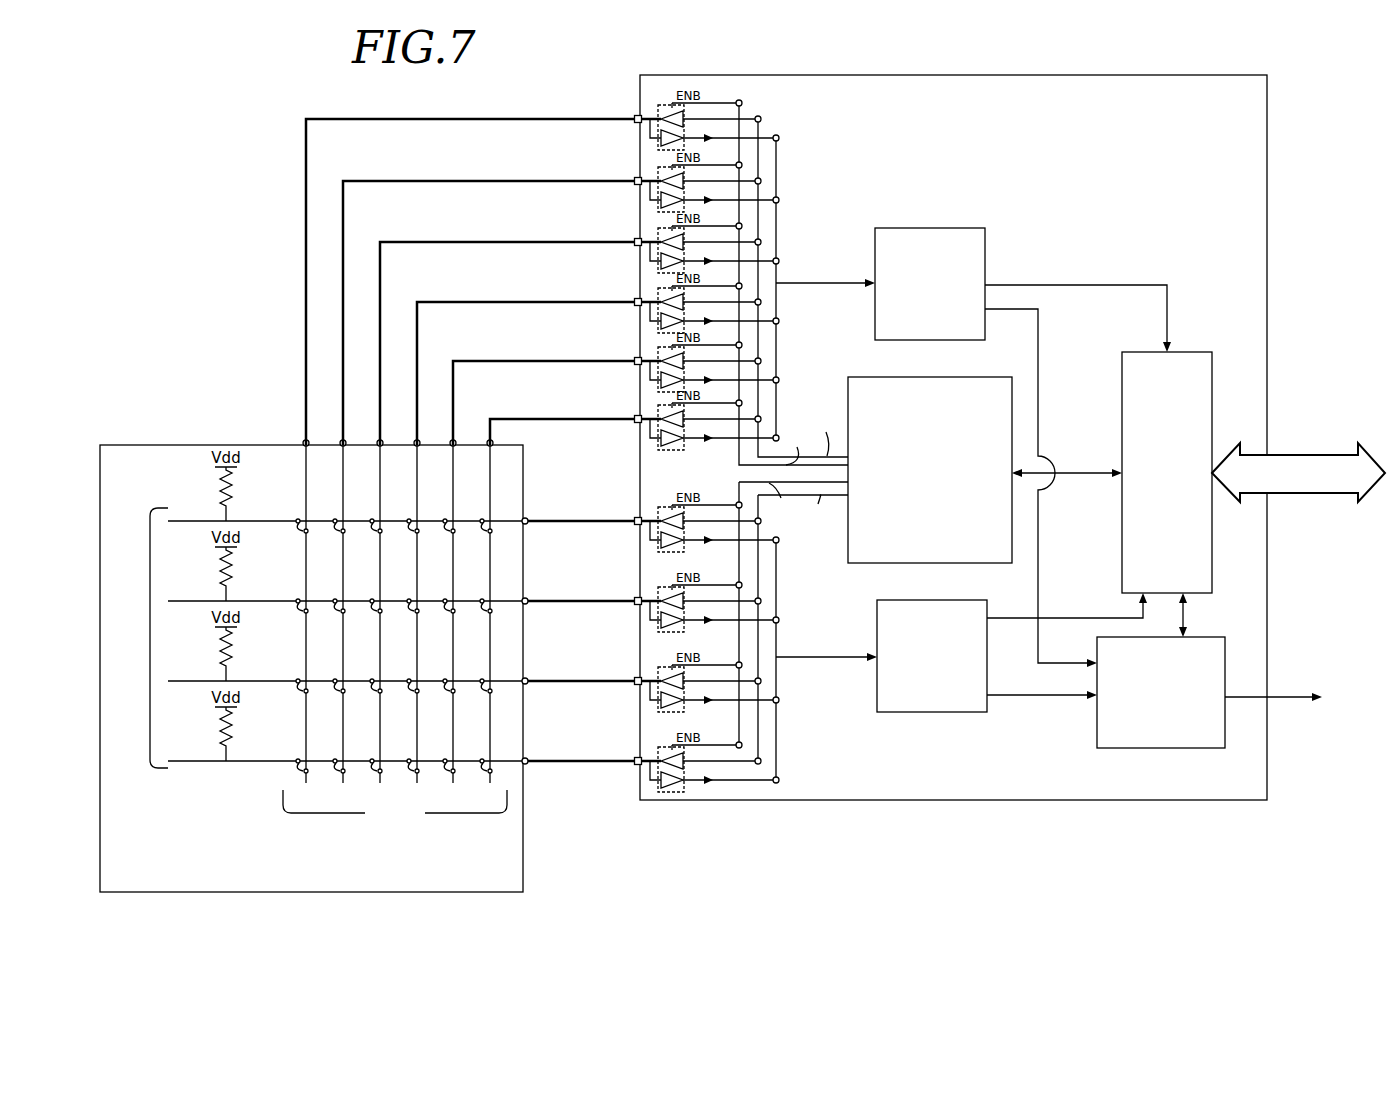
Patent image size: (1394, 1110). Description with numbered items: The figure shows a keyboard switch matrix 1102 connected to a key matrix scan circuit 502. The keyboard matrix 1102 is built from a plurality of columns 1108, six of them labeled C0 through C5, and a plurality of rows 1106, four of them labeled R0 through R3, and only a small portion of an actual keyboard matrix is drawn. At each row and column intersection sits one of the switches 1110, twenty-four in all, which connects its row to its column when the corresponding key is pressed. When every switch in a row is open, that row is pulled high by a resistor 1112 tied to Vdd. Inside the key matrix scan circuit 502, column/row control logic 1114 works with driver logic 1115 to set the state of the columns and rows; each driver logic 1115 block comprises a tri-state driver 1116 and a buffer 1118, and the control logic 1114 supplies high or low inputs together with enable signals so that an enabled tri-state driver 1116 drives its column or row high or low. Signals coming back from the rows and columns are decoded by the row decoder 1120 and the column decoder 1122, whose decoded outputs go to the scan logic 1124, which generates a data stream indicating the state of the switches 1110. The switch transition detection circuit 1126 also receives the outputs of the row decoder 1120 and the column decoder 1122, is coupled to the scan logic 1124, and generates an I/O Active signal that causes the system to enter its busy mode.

The key matrix scan circuit 502 is at (1012, 437).
The keyboard switch matrix 1102 is at (367, 505).
The plurality of rows 1106 is at (141, 638).
The plurality of columns 1108 is at (395, 806).
The switches 1110 is at (298, 528).
The resistor 1112 is at (222, 740).
The column/row control logic 1114 is at (1012, 412).
The driver logic 1115 is at (689, 432).
The tri-state driver 1116 is at (661, 117).
The buffer 1118 is at (661, 140).
The row decoder 1120 is at (960, 712).
The column decoder 1122 is at (985, 265).
The scan logic 1124 is at (1205, 352).
The switch transition detection circuit 1126 is at (1160, 750).